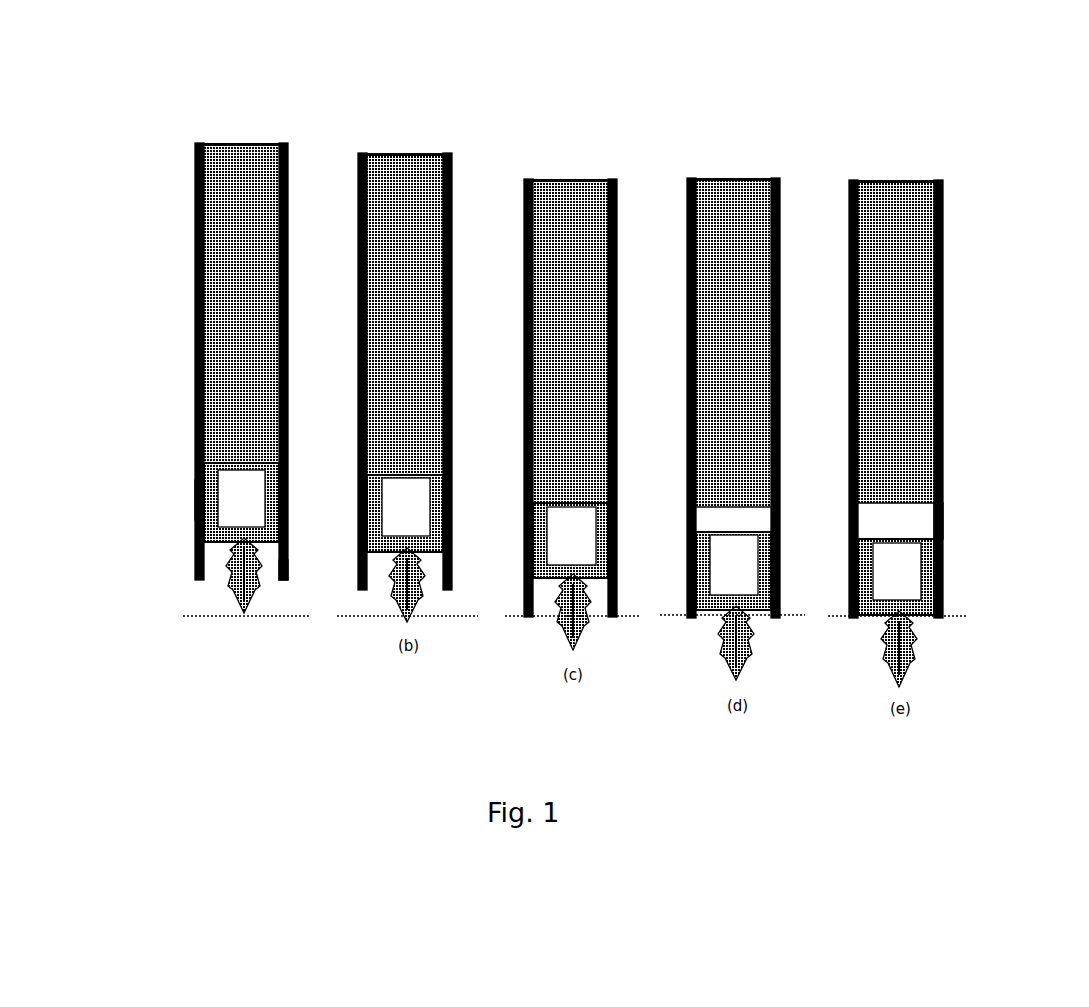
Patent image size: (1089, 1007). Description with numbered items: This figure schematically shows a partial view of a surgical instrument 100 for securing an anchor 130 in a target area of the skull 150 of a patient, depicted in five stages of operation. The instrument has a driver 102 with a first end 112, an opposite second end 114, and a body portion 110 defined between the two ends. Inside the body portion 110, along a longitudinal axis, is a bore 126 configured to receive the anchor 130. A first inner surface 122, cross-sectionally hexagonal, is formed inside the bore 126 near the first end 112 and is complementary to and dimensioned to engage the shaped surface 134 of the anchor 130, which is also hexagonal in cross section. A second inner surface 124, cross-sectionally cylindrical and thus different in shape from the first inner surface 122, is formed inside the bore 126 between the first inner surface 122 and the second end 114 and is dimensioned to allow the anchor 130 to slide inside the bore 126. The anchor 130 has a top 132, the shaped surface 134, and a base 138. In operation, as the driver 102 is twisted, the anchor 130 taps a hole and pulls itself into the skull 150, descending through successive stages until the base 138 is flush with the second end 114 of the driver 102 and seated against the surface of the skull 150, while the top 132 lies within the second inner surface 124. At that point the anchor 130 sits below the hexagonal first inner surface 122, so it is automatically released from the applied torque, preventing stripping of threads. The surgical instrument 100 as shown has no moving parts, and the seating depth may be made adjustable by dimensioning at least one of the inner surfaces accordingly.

The surgical instrument 100 is at (135, 81).
The driver 102 is at (168, 229).
The body portion 110 is at (225, 293).
The first end 112 is at (259, 132).
The second end 114 is at (284, 590).
The first inner surface 122 is at (197, 509).
The second inner surface 124 is at (210, 557).
The bore 126 is at (241, 473).
The anchor 130 is at (226, 599).
The top 132 is at (211, 484).
The shaped surface 134 is at (283, 500).
The base 138 is at (270, 556).
The skull 150 is at (214, 622).